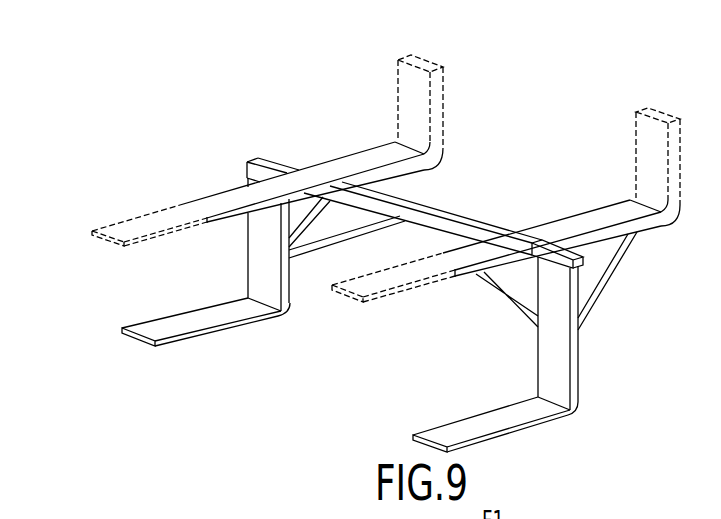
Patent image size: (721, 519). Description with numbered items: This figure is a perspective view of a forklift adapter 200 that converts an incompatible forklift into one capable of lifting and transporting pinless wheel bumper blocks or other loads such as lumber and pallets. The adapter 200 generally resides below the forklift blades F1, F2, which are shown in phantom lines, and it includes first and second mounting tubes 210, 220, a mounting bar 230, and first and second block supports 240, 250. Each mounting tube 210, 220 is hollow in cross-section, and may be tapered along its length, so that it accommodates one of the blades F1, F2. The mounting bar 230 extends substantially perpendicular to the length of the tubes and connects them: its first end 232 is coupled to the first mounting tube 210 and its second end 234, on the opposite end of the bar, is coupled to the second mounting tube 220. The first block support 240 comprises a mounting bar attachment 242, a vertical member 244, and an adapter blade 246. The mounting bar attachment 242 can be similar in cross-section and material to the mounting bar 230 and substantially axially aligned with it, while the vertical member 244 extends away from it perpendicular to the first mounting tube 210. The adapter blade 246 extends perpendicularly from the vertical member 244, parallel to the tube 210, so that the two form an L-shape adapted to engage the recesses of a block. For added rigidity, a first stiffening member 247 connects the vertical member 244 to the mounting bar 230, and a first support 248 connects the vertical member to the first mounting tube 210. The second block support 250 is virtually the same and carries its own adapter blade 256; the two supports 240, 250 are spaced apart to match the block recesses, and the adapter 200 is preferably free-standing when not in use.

The forklift adapter 200 is at (550, 96).
The first mounting tube 210 is at (242, 190).
The second mounting tube 220 is at (606, 216).
The mounting bar 230 is at (453, 212).
The first end of the mounting bar 232 is at (330, 178).
The second end of the mounting bar 234 is at (513, 230).
The first block support 240 is at (249, 280).
The mounting bar attachment 242 is at (258, 162).
The vertical member 244 is at (262, 245).
The adapter blade 246 is at (190, 320).
The first stiffening member 247 is at (287, 249).
The first support 248 is at (430, 184).
The second block support 250 is at (585, 355).
The adapter blade 256 is at (483, 428).
The blade F1 is at (153, 221).
The blade F2 is at (383, 280).